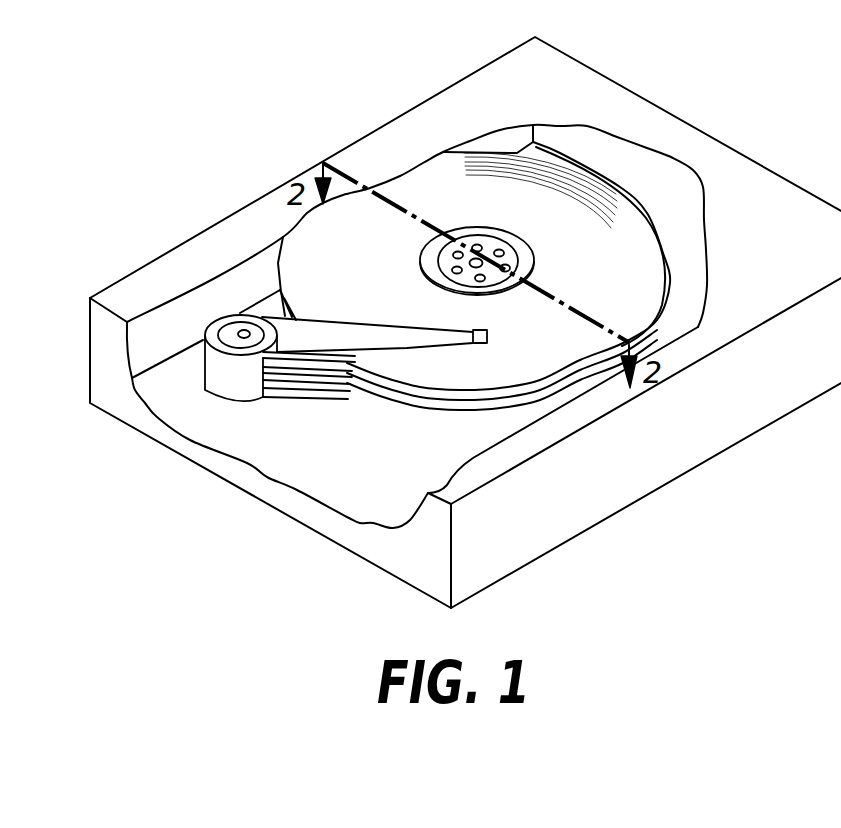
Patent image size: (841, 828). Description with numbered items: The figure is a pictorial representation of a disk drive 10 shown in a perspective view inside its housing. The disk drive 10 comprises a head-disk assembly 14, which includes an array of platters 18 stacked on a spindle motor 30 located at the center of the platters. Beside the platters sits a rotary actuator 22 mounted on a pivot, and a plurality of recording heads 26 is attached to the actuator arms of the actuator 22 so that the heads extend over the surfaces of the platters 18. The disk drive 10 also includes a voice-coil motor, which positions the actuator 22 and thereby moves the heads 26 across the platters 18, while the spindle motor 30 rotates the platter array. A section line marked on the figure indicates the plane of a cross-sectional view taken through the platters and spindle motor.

The disk drive 10 is at (733, 515).
The head-disk assembly 14 is at (340, 410).
The array of platters 18 is at (412, 374).
The rotary actuator 22 is at (353, 330).
The recording heads 26 is at (487, 336).
The spindle motor 30 is at (517, 245).